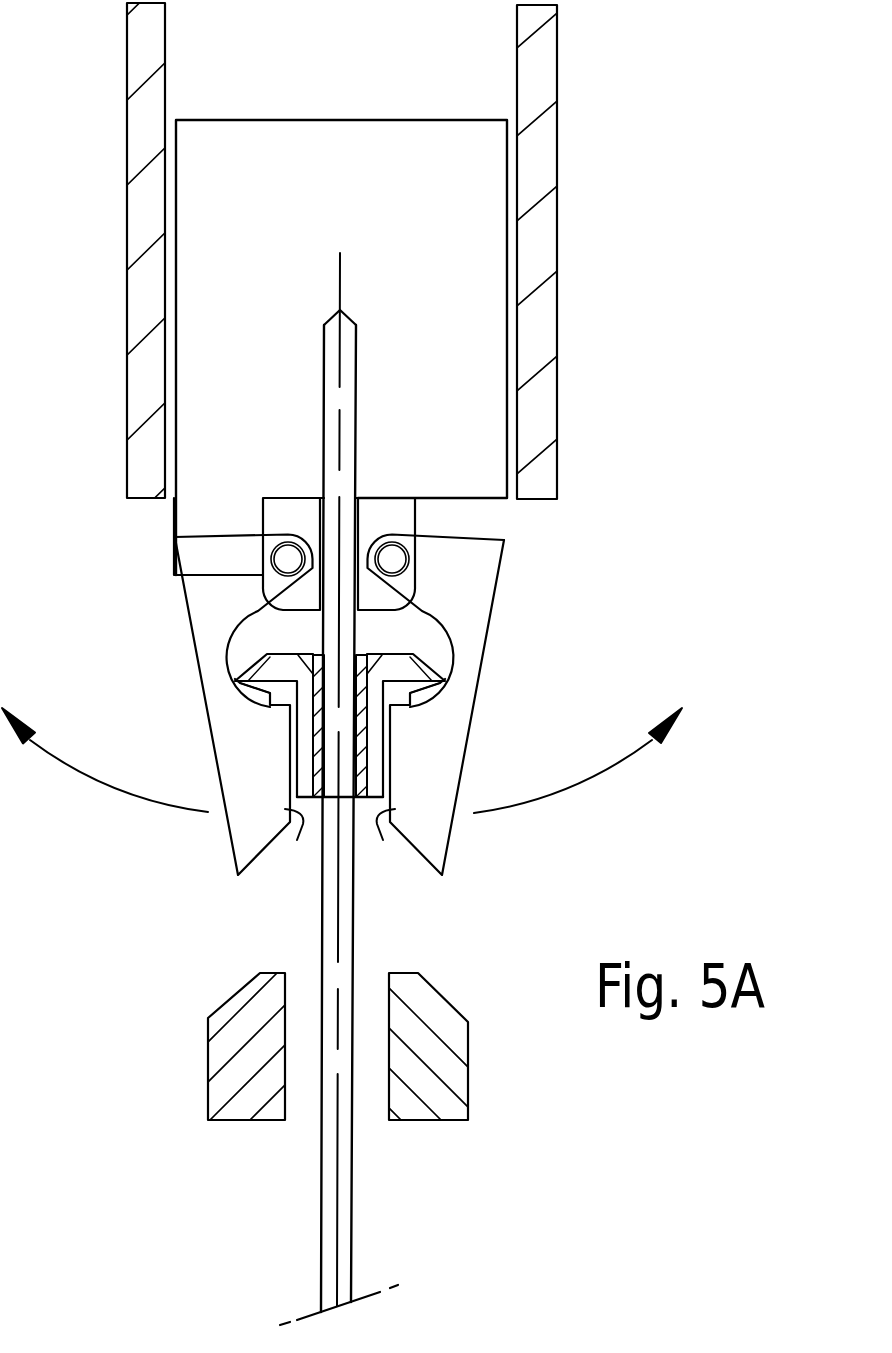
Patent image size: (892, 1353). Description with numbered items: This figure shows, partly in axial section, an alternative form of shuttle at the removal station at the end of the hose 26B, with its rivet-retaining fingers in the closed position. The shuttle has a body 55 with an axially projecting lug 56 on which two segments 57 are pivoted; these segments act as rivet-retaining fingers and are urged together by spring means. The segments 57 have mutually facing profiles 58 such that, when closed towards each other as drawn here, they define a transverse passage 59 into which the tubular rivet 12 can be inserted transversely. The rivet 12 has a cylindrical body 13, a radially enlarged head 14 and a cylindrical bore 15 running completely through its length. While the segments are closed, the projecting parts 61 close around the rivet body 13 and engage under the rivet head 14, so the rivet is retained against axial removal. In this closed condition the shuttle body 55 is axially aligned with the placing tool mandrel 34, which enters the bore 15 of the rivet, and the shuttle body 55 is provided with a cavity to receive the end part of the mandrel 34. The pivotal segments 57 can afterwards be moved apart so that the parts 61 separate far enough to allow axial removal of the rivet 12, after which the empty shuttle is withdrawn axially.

The hose 26B is at (557, 245).
The shuttle body 55 is at (455, 370).
The axially projecting lug 56 is at (398, 517).
The segments 57 is at (224, 618).
The mutually facing profiles 58 is at (240, 677).
The transverse passage 59 is at (410, 632).
The rivet head 14 is at (420, 675).
The tubular rivet 12 is at (375, 762).
The rivet body 13 is at (373, 772).
The cylindrical bore 15 is at (320, 770).
The projecting parts 61 is at (297, 840).
The placing tool mandrel 34 is at (355, 948).